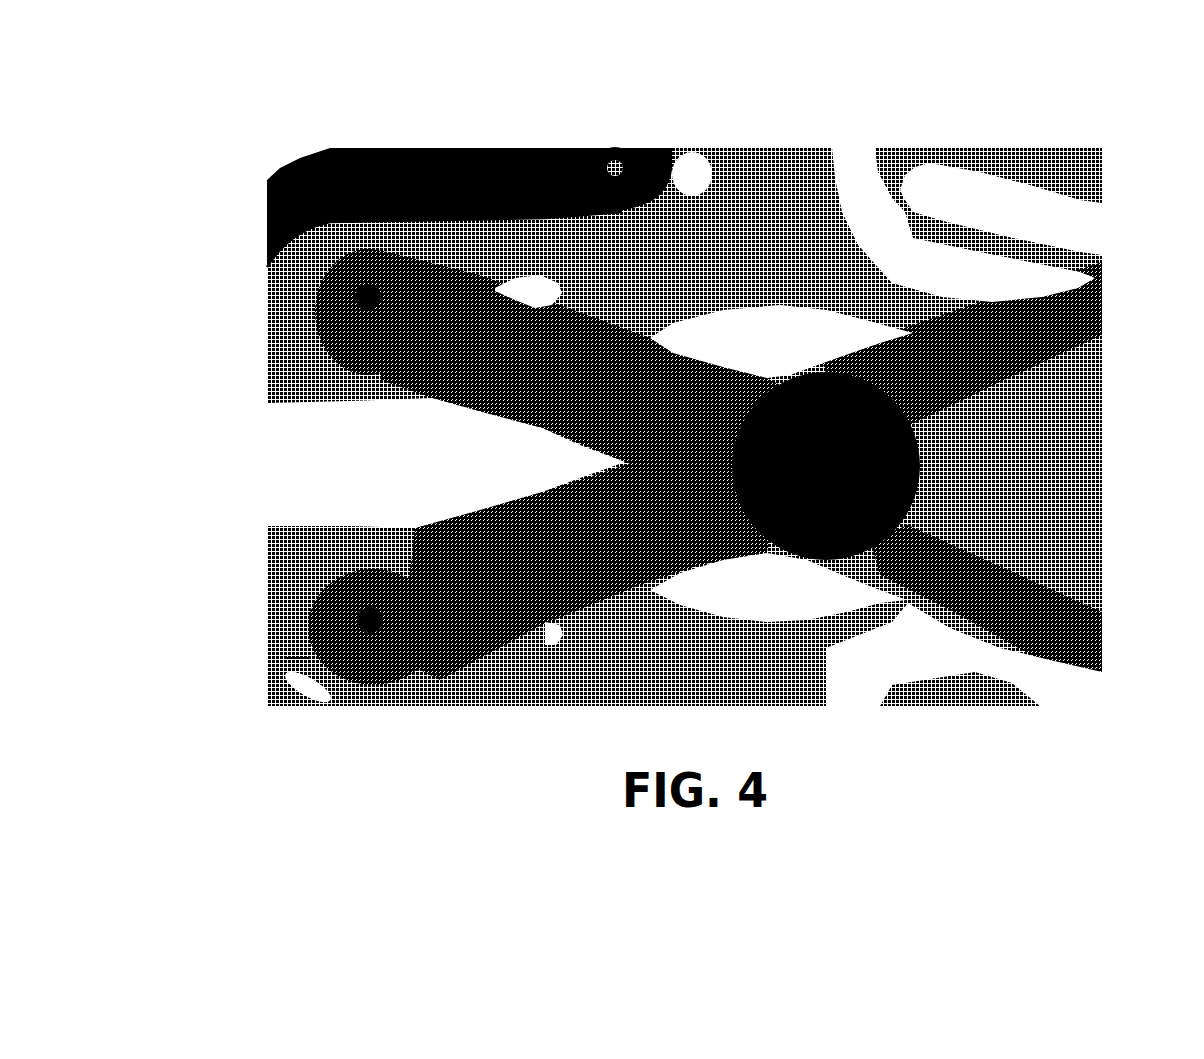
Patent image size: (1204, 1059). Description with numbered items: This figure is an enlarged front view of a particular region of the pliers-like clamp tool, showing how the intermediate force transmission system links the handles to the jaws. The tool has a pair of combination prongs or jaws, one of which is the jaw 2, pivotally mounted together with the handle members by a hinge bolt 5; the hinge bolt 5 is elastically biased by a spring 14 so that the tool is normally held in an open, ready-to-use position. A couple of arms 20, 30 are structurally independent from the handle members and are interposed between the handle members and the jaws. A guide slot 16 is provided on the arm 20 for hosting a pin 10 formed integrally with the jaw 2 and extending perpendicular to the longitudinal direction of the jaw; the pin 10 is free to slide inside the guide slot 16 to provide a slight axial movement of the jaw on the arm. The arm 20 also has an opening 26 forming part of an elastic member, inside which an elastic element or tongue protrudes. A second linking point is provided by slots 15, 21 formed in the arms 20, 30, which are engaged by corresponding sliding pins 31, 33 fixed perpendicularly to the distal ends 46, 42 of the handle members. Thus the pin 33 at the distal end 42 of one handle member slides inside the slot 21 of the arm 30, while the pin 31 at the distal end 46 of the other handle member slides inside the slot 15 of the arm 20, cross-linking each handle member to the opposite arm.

The jaw 2 is at (398, 180).
The hinge bolt 5 is at (828, 463).
The pin 10 is at (612, 172).
The spring 14 is at (908, 520).
The slot 15 is at (530, 292).
The guide slot 16 is at (707, 180).
The arm 20 is at (775, 215).
The slot 21 is at (537, 637).
The opening 26 is at (873, 203).
The arm 30 is at (740, 665).
The sliding pin 31 is at (373, 292).
The sliding pin 33 is at (358, 638).
The distal end 42 is at (335, 622).
The distal end 46 is at (333, 323).